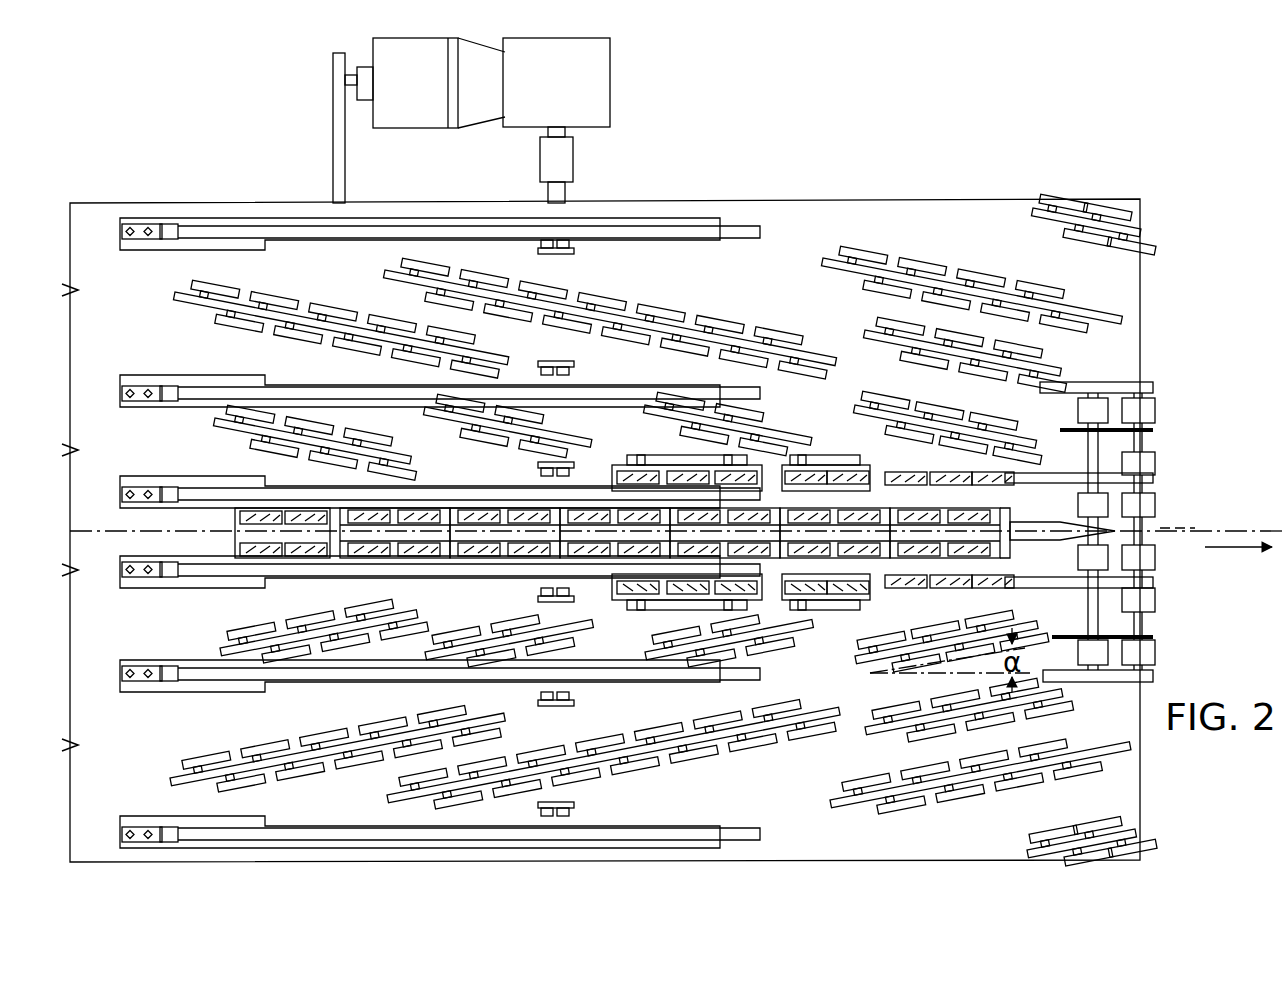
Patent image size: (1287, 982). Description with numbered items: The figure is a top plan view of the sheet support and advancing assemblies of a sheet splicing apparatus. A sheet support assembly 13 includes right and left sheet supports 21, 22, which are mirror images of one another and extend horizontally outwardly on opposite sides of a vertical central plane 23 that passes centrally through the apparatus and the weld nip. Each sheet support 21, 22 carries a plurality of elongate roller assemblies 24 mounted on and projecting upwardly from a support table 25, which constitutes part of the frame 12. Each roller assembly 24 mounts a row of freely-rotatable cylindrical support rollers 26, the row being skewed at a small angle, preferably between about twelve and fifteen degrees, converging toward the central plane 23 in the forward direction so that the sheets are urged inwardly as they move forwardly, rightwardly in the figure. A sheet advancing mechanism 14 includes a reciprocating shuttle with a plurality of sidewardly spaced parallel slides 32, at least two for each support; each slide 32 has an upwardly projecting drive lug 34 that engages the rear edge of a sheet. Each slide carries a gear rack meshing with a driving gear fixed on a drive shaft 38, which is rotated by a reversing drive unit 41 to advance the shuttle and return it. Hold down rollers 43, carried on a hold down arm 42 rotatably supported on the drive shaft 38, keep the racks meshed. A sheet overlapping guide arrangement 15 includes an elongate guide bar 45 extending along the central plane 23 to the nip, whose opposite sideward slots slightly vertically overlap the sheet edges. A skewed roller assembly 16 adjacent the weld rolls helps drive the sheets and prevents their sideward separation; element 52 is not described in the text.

The frame 12 is at (1148, 272).
The sheet support assembly 13 is at (201, 164).
The sheet advancing mechanism 14 is at (146, 360).
The sheet overlapping guide arrangement 15 is at (1018, 550).
The skewed roller assembly 16 is at (1162, 599).
The right sheet support 21 is at (796, 772).
The left sheet support 22 is at (798, 288).
The central vertical plane 23 is at (1270, 526).
The elongate roller assembly 24 is at (352, 303).
The support table 25 is at (853, 208).
The cylindrical support roller 26 is at (618, 326).
The slide 32 is at (220, 241).
The drive lug 34 is at (141, 241).
The drive shaft 38 is at (560, 190).
The reversing drive unit 41 is at (614, 87).
The hold down arm 42 is at (562, 252).
The hold down roller 43 is at (547, 238).
The guide bar 45 is at (1012, 520).
The jet 52 is at (1181, 525).